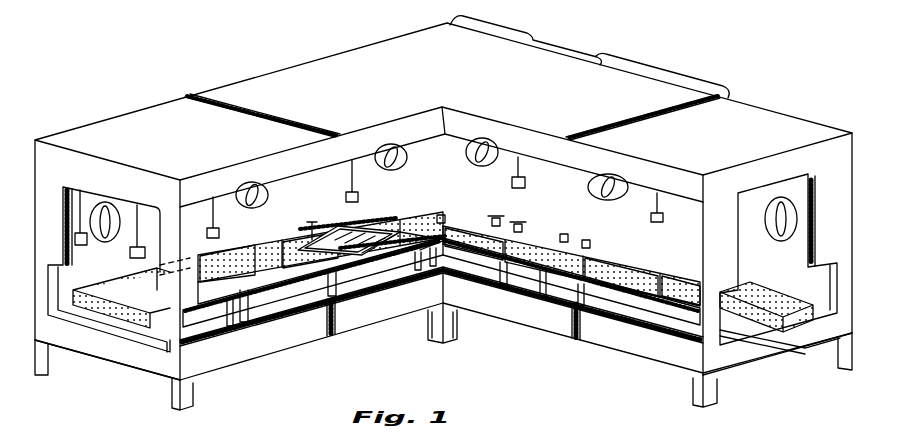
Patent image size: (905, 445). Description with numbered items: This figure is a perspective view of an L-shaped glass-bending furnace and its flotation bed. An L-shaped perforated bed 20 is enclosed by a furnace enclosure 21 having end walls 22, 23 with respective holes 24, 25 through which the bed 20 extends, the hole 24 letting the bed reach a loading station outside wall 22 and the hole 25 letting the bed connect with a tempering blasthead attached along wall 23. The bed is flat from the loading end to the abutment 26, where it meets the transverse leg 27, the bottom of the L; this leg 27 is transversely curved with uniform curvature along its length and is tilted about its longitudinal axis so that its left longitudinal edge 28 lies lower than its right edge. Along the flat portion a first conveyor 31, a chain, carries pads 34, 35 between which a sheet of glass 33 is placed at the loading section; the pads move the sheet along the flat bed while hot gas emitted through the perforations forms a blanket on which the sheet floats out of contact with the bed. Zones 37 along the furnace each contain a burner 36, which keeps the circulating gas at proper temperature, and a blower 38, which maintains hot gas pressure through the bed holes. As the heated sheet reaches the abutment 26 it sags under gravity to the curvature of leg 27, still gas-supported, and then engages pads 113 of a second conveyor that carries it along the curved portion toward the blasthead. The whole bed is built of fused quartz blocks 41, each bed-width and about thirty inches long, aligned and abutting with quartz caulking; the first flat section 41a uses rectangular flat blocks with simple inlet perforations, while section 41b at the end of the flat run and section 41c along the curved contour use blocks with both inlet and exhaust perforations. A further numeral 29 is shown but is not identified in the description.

The L-shaped perforated bed 20 is at (441, 268).
The furnace enclosure 21 is at (150, 118).
The end wall 22 is at (37, 140).
The end wall 23 is at (851, 136).
The hole 24 is at (148, 343).
The hole 25 is at (737, 300).
The abutment 26 is at (371, 215).
The transverse leg 27 is at (580, 268).
The left longitudinal edge 28 is at (650, 262).
The tray 29 is at (520, 248).
The conveyor 31 is at (312, 222).
The sheet of glass 33 is at (352, 215).
The pad 34 is at (227, 263).
The pad 35 is at (398, 216).
The burner 36 is at (213, 200).
The zone 37 is at (548, 33).
The blower 38 is at (248, 184).
The fused quartz block 41 is at (484, 246).
The bed section 41a is at (262, 306).
The bed section 41b is at (368, 280).
The bed section 41c is at (590, 232).
The pad 113 is at (519, 226).